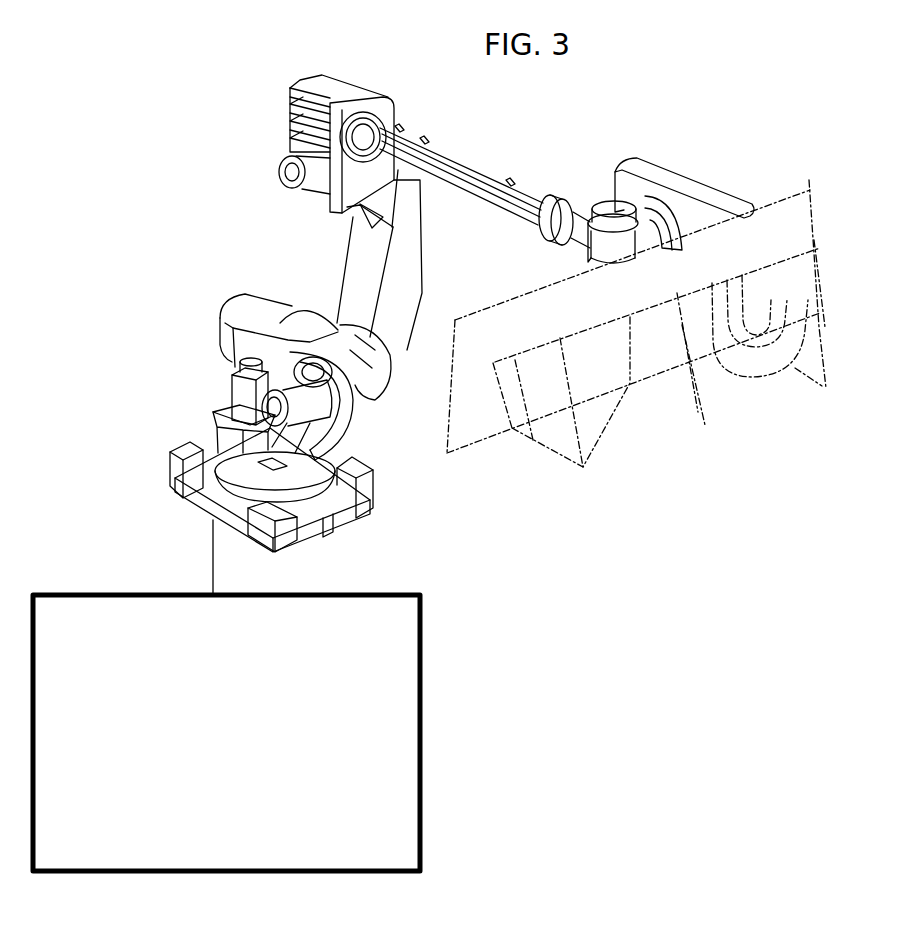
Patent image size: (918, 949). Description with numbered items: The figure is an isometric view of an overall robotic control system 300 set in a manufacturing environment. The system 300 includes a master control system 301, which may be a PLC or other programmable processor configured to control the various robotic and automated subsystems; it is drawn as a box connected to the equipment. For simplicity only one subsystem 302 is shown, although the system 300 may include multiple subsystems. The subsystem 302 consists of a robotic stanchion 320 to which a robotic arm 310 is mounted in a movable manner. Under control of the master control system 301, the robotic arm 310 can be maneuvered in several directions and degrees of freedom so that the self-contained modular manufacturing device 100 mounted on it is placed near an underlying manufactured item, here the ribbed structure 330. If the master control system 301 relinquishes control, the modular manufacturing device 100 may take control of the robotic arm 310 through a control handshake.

The robotic control system 300 is at (415, 112).
The subsystem 302 is at (250, 280).
The robotic arm 310 is at (482, 153).
The robotic stanchion 320 is at (400, 505).
The ribbed structure 330 is at (692, 432).
The self-contained modular manufacturing device 100 is at (704, 160).
The master control system 301 is at (211, 754).